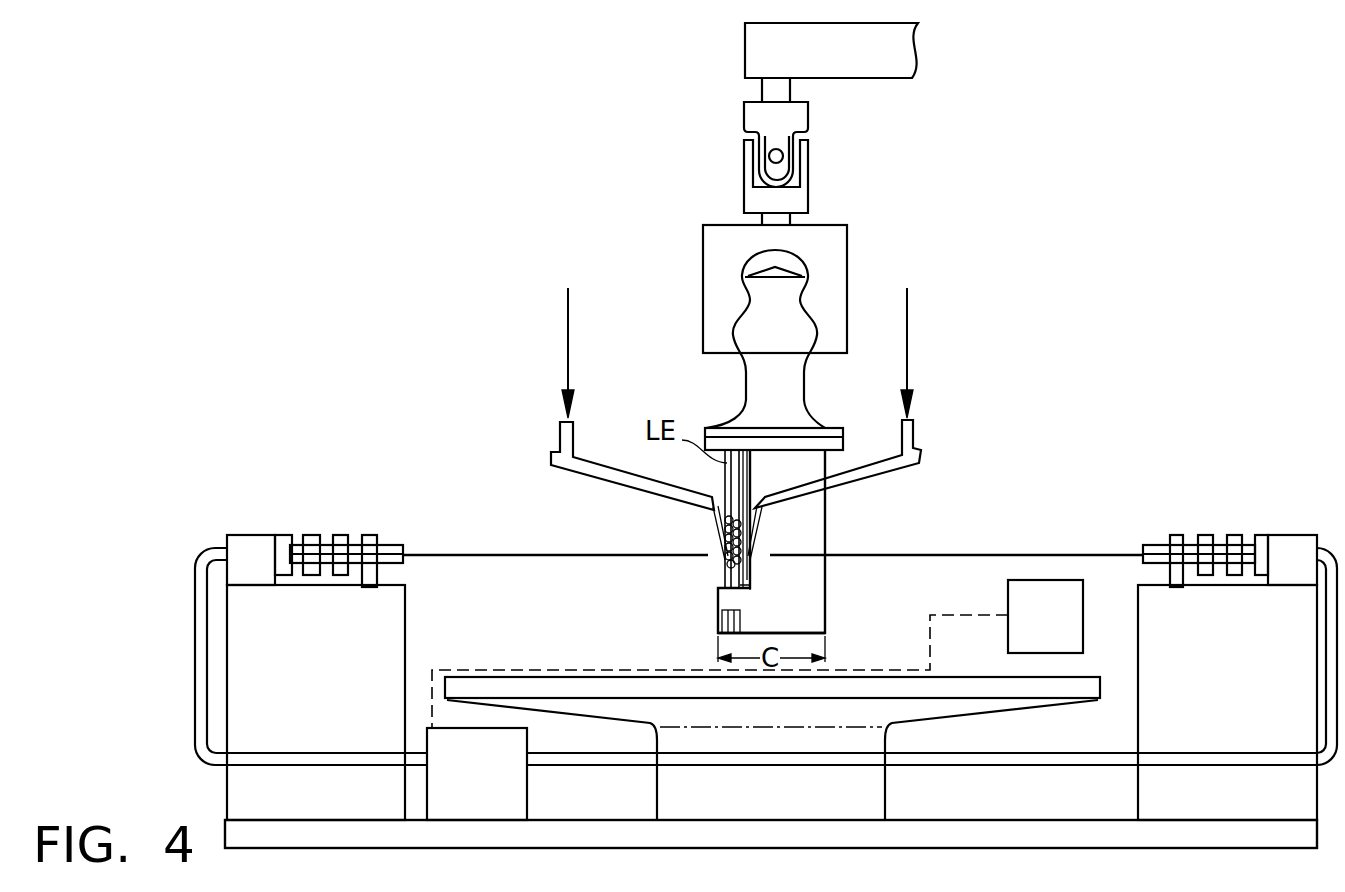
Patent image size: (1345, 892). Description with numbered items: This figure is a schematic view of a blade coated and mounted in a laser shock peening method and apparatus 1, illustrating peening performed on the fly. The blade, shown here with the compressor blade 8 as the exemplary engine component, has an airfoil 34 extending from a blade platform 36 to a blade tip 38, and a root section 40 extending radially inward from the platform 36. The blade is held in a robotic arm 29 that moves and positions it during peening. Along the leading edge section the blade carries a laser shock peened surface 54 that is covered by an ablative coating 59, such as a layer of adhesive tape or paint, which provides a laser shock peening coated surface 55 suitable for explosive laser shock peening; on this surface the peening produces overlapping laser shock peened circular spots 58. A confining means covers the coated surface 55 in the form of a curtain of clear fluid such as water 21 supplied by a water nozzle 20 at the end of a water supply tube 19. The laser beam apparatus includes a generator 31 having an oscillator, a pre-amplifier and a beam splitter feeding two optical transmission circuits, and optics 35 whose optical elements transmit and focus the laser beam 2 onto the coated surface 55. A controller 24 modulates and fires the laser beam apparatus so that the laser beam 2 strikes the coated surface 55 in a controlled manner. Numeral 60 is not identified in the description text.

The laser shock peening method and apparatus 1 is at (1084, 306).
The laser beam 2 is at (455, 555).
The compressor blade 8 is at (832, 521).
The water supply tube 19 is at (605, 480).
The water nozzle 20 is at (752, 506).
The curtain of clear fluid such as water 21 is at (714, 523).
The controller 24 is at (1030, 627).
The robotic arm 29 is at (828, 125).
The generator 31 is at (462, 787).
The airfoil 34 is at (830, 553).
The optics 35 is at (312, 535).
The blade platform 36 is at (843, 437).
The blade tip 38 is at (812, 633).
The root section 40 is at (805, 368).
The laser shock peened surface 54 is at (728, 598).
The laser shock peening coated surface 55 is at (752, 584).
The laser shock peened circular spots 58 is at (714, 573).
The ablative coating 59 is at (736, 486).
The cutting edge 60 is at (750, 533).